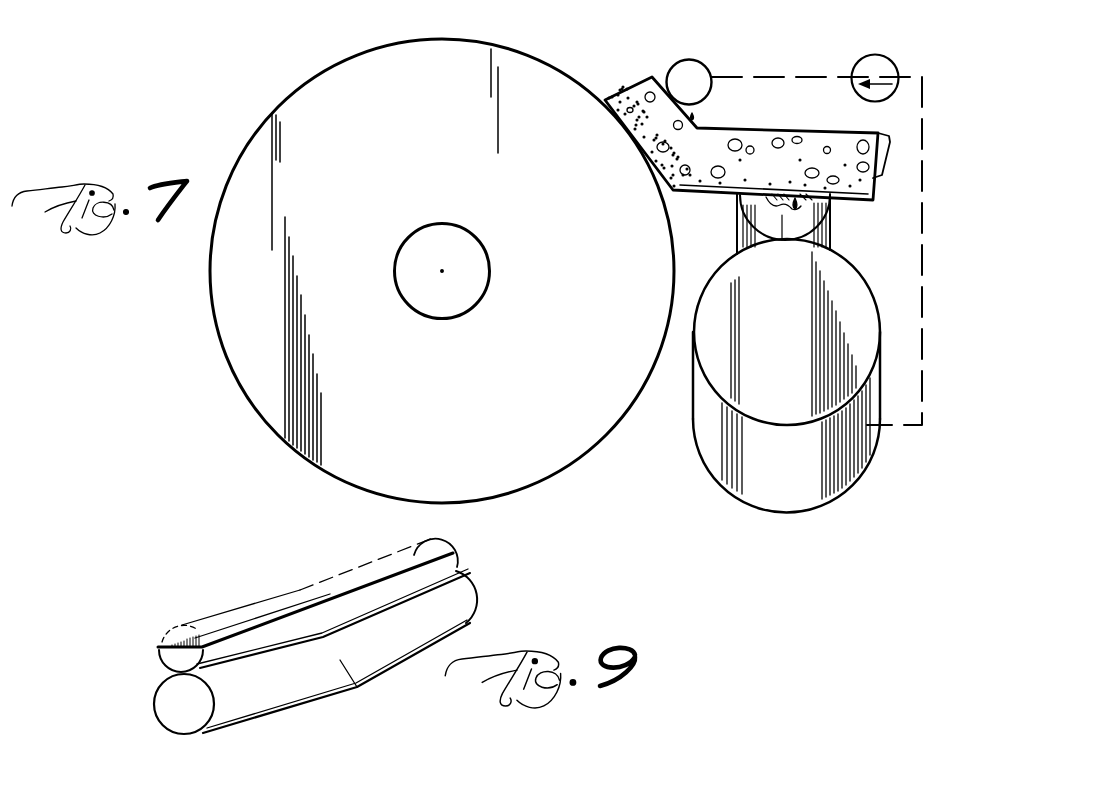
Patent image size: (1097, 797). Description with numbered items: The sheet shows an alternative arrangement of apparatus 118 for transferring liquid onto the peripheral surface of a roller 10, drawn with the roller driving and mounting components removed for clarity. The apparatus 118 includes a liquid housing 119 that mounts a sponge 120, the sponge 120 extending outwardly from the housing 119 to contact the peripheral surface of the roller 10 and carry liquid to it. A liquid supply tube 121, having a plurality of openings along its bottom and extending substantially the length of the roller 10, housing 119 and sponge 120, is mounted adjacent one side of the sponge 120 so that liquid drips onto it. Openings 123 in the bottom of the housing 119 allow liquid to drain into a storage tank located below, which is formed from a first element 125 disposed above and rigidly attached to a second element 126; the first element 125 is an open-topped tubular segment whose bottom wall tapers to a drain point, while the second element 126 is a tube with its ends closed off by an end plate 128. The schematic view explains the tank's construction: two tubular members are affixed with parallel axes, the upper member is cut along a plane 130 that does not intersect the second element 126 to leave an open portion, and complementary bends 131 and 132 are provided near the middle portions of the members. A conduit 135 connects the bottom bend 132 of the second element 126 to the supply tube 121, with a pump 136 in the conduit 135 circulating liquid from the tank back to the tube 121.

In FIG. 7, the roller 10 is at (217, 372).
In FIG. 7, the apparatus for transfering liquid 118 is at (160, 0).
In FIG. 7, the liquid housing 119 is at (878, 133).
In FIG. 7, the sponge 120 is at (650, 97).
In FIG. 7, the liquid supply tube 121 is at (687, 78).
In FIG. 7, the openings 123 is at (790, 193).
In FIG. 7, the first element 125 is at (830, 231).
In FIG. 9, the first element 125 is at (413, 575).
In FIG. 7, the second element 126 is at (702, 432).
In FIG. 9, the second element 126 is at (440, 626).
In FIG. 7, the end plate 128 is at (790, 381).
In FIG. 9, the end plate 128 is at (204, 716).
In FIG. 9, the plane 130 is at (238, 615).
In FIG. 9, the bend 131 is at (323, 637).
In FIG. 7, the bend 132 is at (857, 477).
In FIG. 9, the bend 132 is at (357, 687).
In FIG. 7, the conduit 135 is at (922, 209).
In FIG. 7, the pump 136 is at (860, 58).